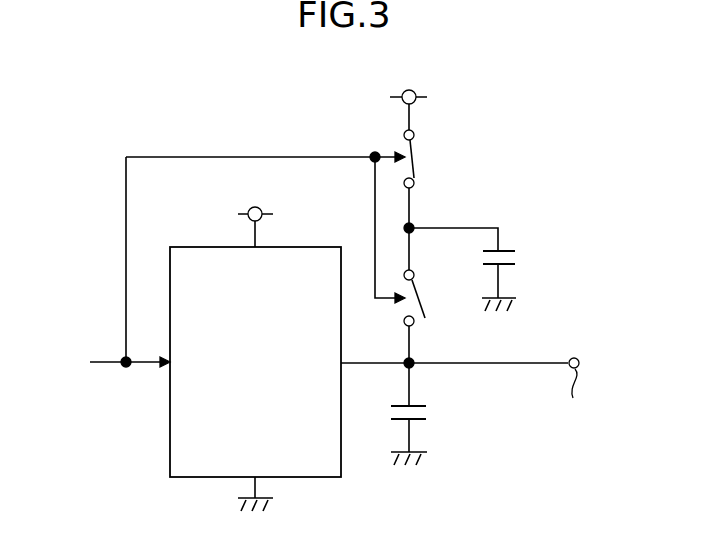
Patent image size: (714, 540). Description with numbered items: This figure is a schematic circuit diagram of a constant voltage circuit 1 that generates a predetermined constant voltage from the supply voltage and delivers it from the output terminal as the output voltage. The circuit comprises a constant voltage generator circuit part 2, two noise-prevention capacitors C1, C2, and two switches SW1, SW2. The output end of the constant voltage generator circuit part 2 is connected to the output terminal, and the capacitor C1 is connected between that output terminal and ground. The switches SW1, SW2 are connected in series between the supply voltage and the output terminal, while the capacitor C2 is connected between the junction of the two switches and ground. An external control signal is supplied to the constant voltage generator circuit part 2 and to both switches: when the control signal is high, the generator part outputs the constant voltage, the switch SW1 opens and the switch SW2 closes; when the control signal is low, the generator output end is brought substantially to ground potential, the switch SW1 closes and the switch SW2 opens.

The constant voltage circuit 1 is at (518, 126).
The constant voltage generator circuit part 2 is at (170, 423).
The switch SW1 is at (427, 146).
The switch SW2 is at (418, 321).
The capacitor C1 is at (425, 414).
The capacitor C2 is at (479, 269).